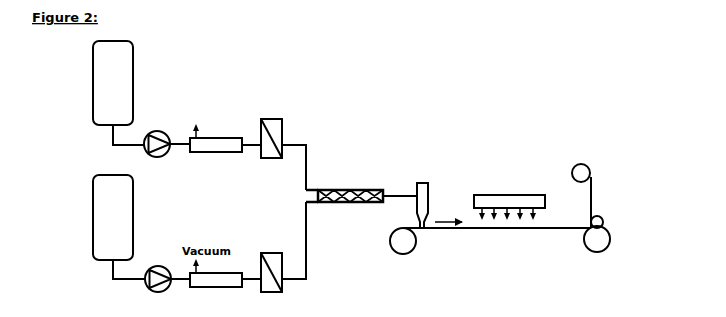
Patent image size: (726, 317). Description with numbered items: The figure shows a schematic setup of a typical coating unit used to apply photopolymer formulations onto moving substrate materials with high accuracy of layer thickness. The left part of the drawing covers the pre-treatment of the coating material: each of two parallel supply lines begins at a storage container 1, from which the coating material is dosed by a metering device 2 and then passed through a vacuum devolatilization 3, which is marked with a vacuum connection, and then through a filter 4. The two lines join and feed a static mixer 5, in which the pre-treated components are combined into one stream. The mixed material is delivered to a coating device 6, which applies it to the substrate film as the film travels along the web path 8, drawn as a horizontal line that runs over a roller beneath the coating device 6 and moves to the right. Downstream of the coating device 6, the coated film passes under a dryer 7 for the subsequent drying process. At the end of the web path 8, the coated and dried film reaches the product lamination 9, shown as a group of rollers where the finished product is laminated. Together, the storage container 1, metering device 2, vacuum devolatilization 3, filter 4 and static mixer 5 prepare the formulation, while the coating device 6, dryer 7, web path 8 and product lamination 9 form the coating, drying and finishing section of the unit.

The storage container 1 is at (105, 75).
The metering device 2 is at (158, 127).
The vacuum devolatilization 3 is at (234, 134).
The filter 4 is at (287, 112).
The static mixer 5 is at (347, 184).
The coating device 6 is at (430, 178).
The dryer 7 is at (516, 190).
The web path 8 is at (432, 233).
The product lamination 9 is at (593, 165).